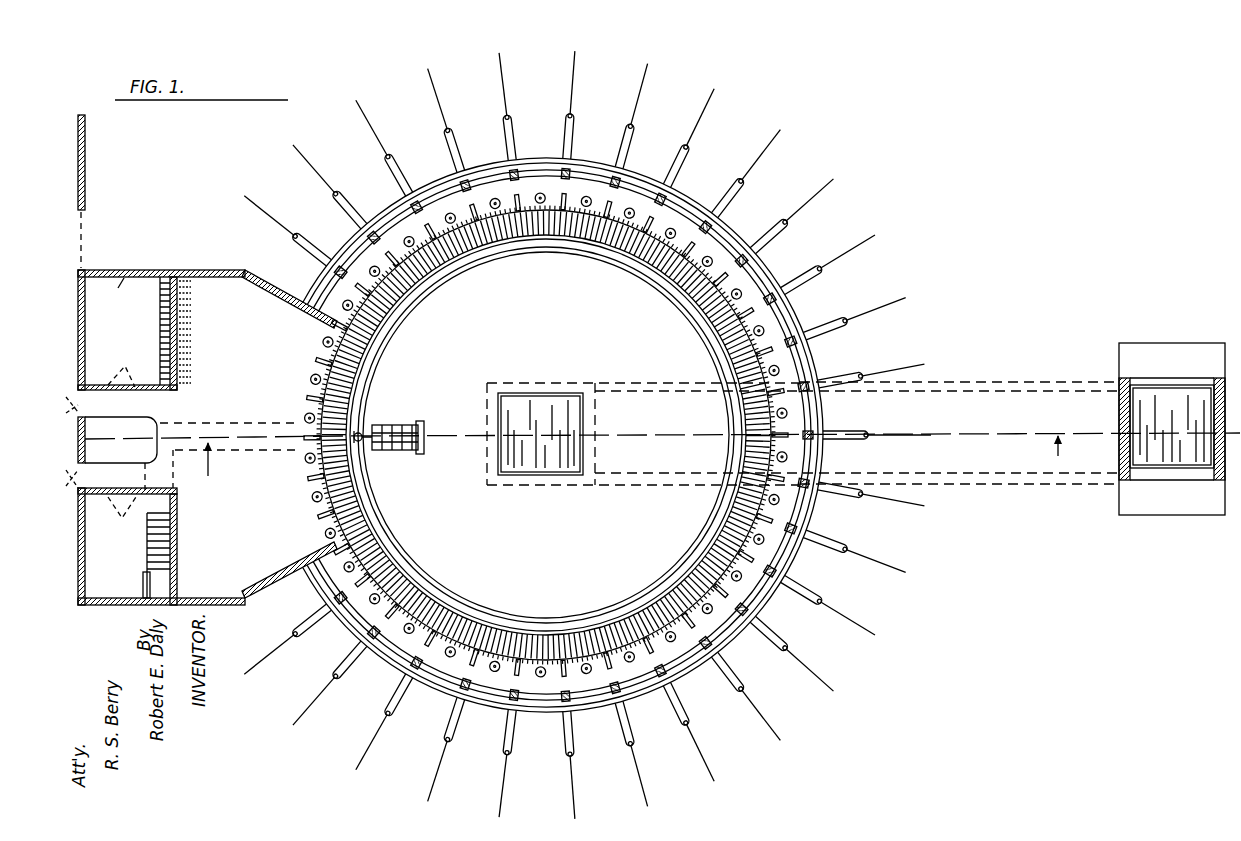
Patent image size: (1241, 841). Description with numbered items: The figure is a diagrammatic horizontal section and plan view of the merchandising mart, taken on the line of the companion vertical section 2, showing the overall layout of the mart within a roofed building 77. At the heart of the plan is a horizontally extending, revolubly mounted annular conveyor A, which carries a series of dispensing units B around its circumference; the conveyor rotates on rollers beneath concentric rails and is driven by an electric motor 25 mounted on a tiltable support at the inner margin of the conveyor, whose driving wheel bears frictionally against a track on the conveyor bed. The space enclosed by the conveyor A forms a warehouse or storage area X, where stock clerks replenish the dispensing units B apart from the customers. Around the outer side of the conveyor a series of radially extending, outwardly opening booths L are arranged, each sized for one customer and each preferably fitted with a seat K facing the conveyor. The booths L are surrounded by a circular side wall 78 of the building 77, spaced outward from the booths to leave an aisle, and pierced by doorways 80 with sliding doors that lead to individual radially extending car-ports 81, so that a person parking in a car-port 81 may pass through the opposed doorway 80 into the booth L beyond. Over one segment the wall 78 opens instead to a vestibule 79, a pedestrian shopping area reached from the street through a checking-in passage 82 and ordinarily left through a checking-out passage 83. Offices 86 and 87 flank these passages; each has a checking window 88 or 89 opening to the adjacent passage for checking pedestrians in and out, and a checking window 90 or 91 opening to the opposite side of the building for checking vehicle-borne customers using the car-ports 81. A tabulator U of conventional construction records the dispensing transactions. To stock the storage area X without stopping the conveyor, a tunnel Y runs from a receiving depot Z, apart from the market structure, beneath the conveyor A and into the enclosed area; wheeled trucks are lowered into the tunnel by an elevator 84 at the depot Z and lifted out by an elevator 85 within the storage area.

The electric motor 25 is at (364, 430).
The roofed building 77 is at (222, 257).
The circular side wall 78 is at (367, 230).
The vestibule 79 is at (248, 365).
The doorways 80 is at (392, 206).
The car-ports 81 is at (405, 122).
The checking-in passage 82 is at (183, 443).
The checking-out passage 83 is at (213, 409).
The elevator 84 is at (1140, 410).
The elevator 85 is at (498, 408).
The office 86 is at (127, 546).
The office 87 is at (127, 330).
The checking window 88 is at (122, 385).
The checking window 89 is at (120, 510).
The checking window 90 is at (118, 598).
The checking window 91 is at (110, 290).
The section line 2— 2 is at (635, 468).
The annular conveyor A is at (556, 247).
The dispensing units B is at (623, 240).
The seat K is at (537, 192).
The booths L is at (478, 190).
The tabulator U is at (160, 312).
The storage area X is at (542, 335).
The tunnel Y is at (1040, 384).
The receiving depot Z is at (1104, 490).